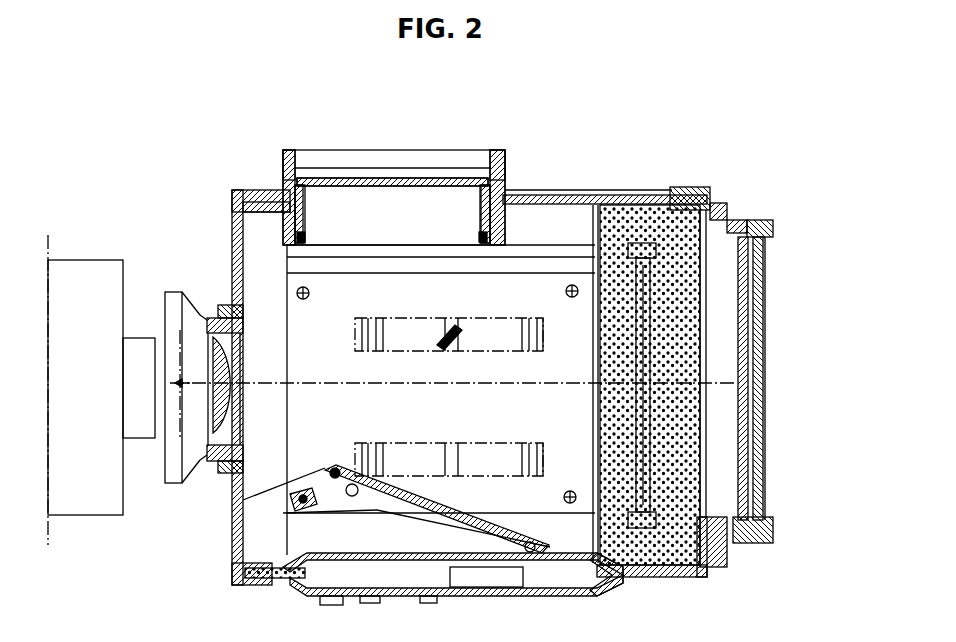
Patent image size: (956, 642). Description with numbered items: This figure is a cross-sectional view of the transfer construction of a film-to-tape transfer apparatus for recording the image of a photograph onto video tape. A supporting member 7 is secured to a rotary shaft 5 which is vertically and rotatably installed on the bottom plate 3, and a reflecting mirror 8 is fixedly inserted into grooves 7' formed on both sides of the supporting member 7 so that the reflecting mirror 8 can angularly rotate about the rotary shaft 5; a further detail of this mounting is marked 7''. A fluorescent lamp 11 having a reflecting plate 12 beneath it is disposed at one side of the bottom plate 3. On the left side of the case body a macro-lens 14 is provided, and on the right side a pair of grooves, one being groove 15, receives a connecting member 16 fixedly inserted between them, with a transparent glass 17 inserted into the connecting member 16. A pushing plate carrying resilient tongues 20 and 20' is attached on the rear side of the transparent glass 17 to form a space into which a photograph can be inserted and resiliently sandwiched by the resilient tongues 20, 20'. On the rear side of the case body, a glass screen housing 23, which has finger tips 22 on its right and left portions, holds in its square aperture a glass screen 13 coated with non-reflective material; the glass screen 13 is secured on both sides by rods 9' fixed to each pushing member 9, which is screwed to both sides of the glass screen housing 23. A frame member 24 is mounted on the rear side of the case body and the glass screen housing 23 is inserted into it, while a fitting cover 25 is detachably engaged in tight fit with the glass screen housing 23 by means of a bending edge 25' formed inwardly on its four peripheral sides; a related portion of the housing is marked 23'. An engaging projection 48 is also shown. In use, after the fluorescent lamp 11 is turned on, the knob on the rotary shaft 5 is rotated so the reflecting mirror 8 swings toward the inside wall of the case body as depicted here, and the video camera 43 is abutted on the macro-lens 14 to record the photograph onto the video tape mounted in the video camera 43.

The bottom plate 3 is at (538, 285).
The rotary shaft 5 is at (300, 512).
The supporting member 7 is at (396, 553).
The groove 7' is at (229, 417).
The end fitting 7'' is at (610, 587).
The reflecting mirror 8 is at (513, 520).
The pushing member 9 is at (399, 173).
The rod 9' is at (338, 167).
The fluorescent lamp 11 is at (652, 370).
The reflecting plate 12 is at (640, 218).
The glass screen 13 is at (412, 177).
The macro-lens 14 is at (212, 487).
The groove 15 is at (722, 210).
The connecting member 16 is at (738, 214).
The transparent glass 17 is at (750, 402).
The resilient tongue 20 is at (798, 378).
The resilient tongue 20' is at (796, 482).
The finger tip 22 is at (523, 200).
The glass screen housing 23 is at (207, 205).
The box plate 23' is at (409, 135).
The frame member 24 is at (525, 198).
The fitting cover 25 is at (516, 143).
The bending edge 25' is at (312, 134).
The video camera 43 is at (83, 515).
The engaging projection 48 is at (440, 332).